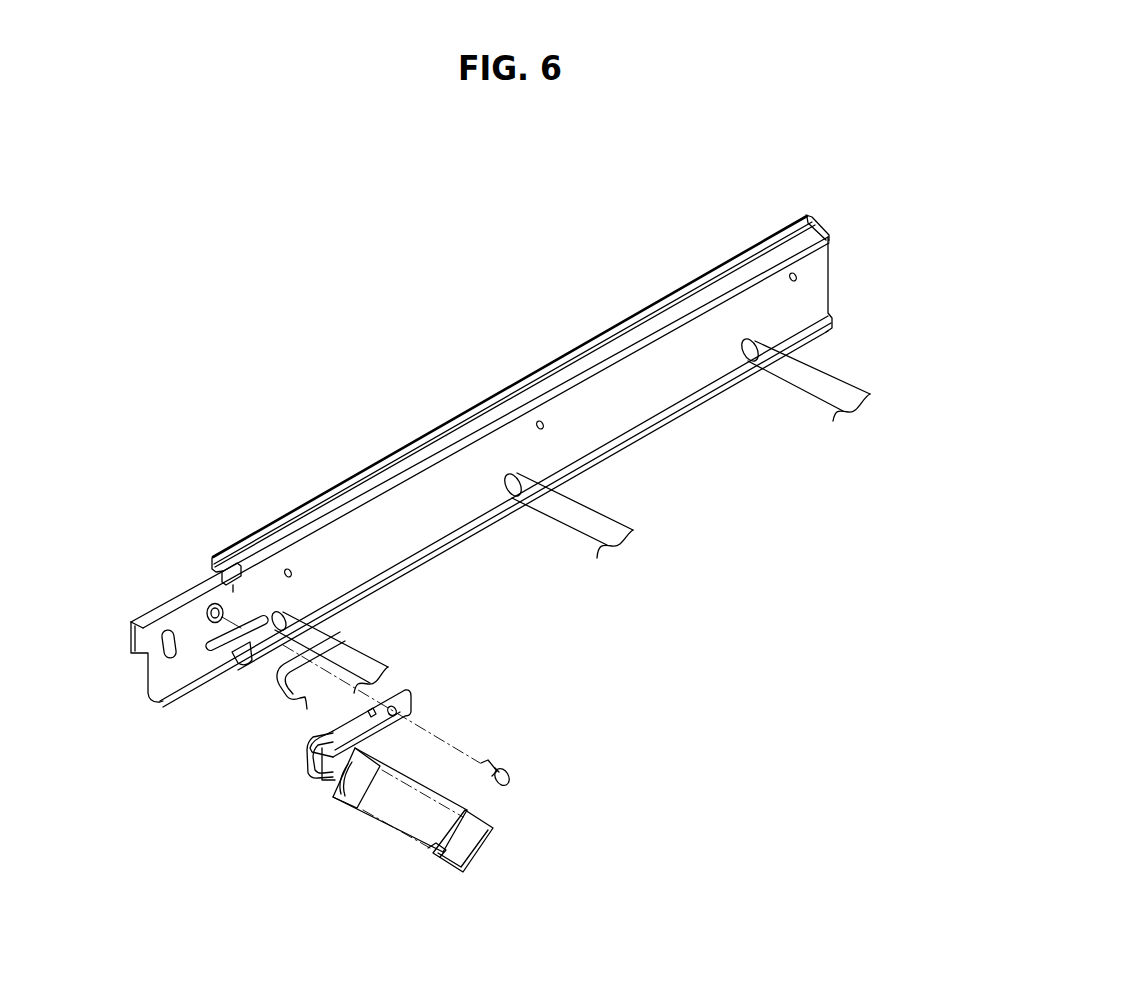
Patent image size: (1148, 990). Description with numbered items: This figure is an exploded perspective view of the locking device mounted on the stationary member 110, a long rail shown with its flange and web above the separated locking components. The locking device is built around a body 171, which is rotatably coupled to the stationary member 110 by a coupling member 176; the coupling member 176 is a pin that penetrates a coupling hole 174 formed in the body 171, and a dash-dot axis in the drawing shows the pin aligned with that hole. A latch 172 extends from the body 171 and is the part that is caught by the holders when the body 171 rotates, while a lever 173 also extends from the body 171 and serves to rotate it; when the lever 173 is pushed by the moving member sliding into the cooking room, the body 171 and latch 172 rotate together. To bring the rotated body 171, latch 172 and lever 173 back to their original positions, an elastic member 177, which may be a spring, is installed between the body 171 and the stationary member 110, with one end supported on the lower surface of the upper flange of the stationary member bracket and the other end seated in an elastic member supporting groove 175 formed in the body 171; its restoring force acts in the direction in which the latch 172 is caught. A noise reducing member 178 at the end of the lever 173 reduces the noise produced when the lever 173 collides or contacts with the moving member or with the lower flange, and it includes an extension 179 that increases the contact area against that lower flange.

The stationary member 110 is at (809, 211).
The body 171 is at (340, 797).
The latch 172 is at (314, 776).
The lever 173 is at (352, 795).
The coupling hole 174 is at (395, 713).
The elastic member supporting groove 175 is at (372, 742).
The coupling member 176 is at (511, 778).
The elastic member 177 is at (281, 697).
The noise reducing member 178 is at (455, 867).
The extension 179 is at (433, 853).